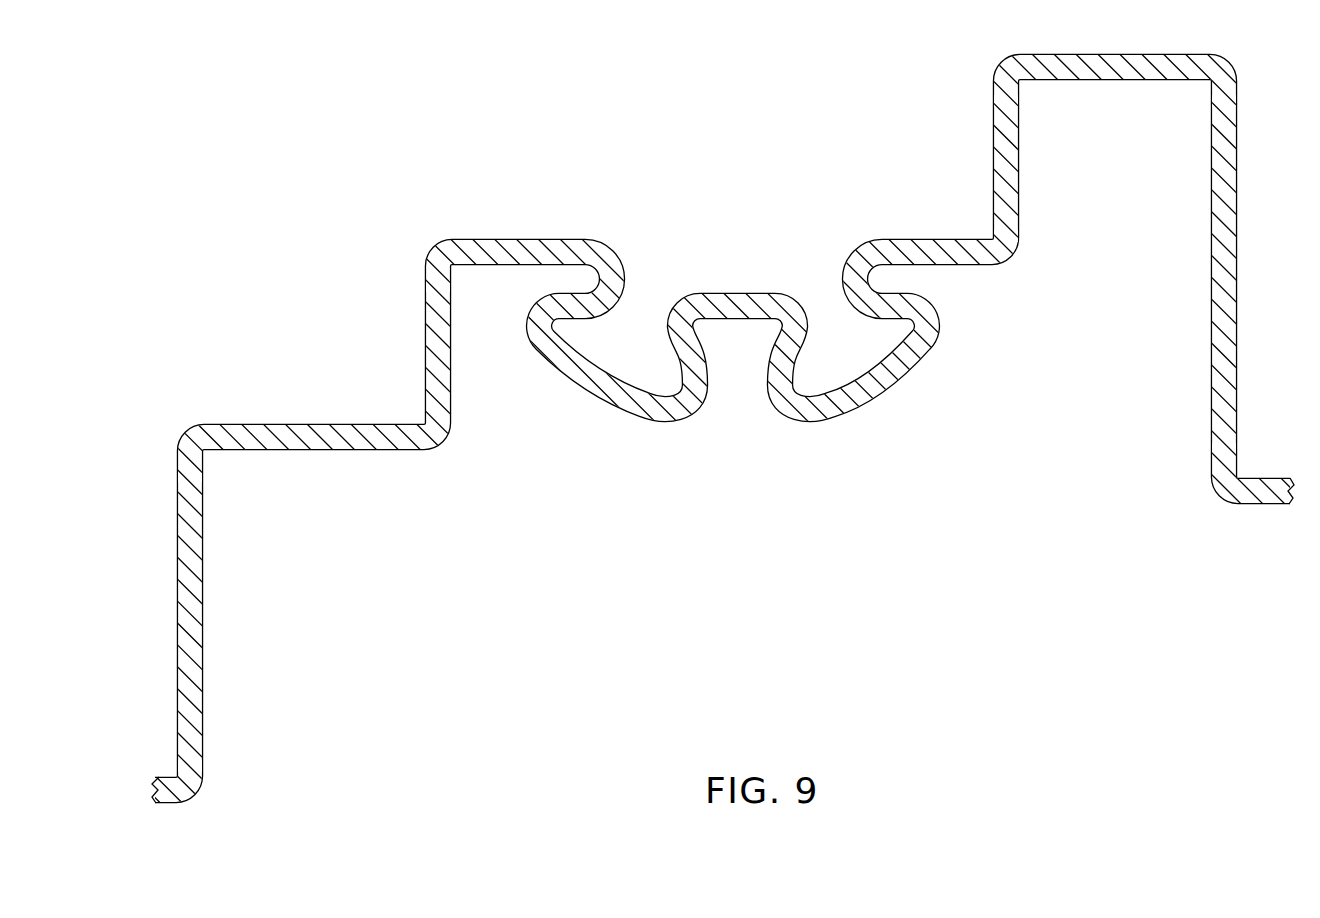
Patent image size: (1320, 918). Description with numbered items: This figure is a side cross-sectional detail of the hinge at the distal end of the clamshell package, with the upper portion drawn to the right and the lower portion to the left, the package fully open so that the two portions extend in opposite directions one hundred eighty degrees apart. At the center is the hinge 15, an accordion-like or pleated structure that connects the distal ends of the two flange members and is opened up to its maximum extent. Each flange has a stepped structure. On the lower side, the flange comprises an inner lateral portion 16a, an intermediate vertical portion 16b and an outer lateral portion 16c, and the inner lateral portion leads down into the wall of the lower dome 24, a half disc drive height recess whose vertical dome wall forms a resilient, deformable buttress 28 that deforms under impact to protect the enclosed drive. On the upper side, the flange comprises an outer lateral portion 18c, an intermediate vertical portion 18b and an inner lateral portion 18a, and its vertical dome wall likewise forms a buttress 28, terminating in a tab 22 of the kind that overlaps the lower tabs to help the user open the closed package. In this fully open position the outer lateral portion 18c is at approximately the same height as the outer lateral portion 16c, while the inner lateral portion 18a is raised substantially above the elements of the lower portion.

The hinge 15 is at (936, 227).
The inner lateral portion 16a is at (257, 452).
The intermediate vertical portion 16b is at (452, 402).
The outer lateral portion 16c is at (497, 240).
The inner lateral portion 18a is at (1088, 80).
The intermediate vertical portion 18b is at (1018, 153).
The outer lateral portion 18c is at (965, 267).
The tab 22 is at (1257, 503).
The lower dome 24 is at (172, 805).
The buttress 28 is at (203, 740).